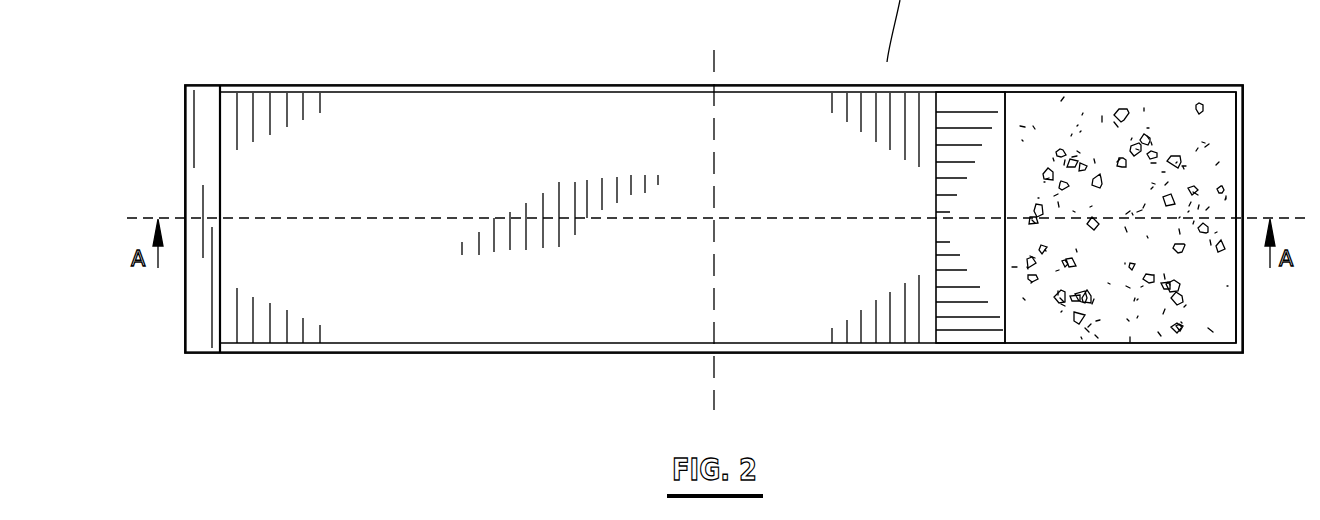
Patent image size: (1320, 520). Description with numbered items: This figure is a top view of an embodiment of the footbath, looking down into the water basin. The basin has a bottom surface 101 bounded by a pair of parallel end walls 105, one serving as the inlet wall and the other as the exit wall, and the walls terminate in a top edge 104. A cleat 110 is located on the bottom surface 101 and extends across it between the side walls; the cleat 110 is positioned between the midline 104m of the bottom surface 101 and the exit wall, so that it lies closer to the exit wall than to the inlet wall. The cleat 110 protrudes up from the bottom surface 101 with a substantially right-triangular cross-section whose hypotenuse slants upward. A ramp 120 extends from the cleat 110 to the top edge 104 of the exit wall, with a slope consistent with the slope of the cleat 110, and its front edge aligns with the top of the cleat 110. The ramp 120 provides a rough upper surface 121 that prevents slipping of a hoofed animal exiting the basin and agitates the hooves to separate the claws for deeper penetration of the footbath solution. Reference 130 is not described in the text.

The bottom surface 101 is at (598, 125).
The top edge 104 is at (975, 90).
The midline 104m is at (714, 377).
The end walls 105 is at (1245, 275).
The cleat 110 is at (972, 280).
The ramp 120 is at (1112, 105).
The rough upper surface 121 is at (1172, 288).
The end cap 130 is at (207, 110).